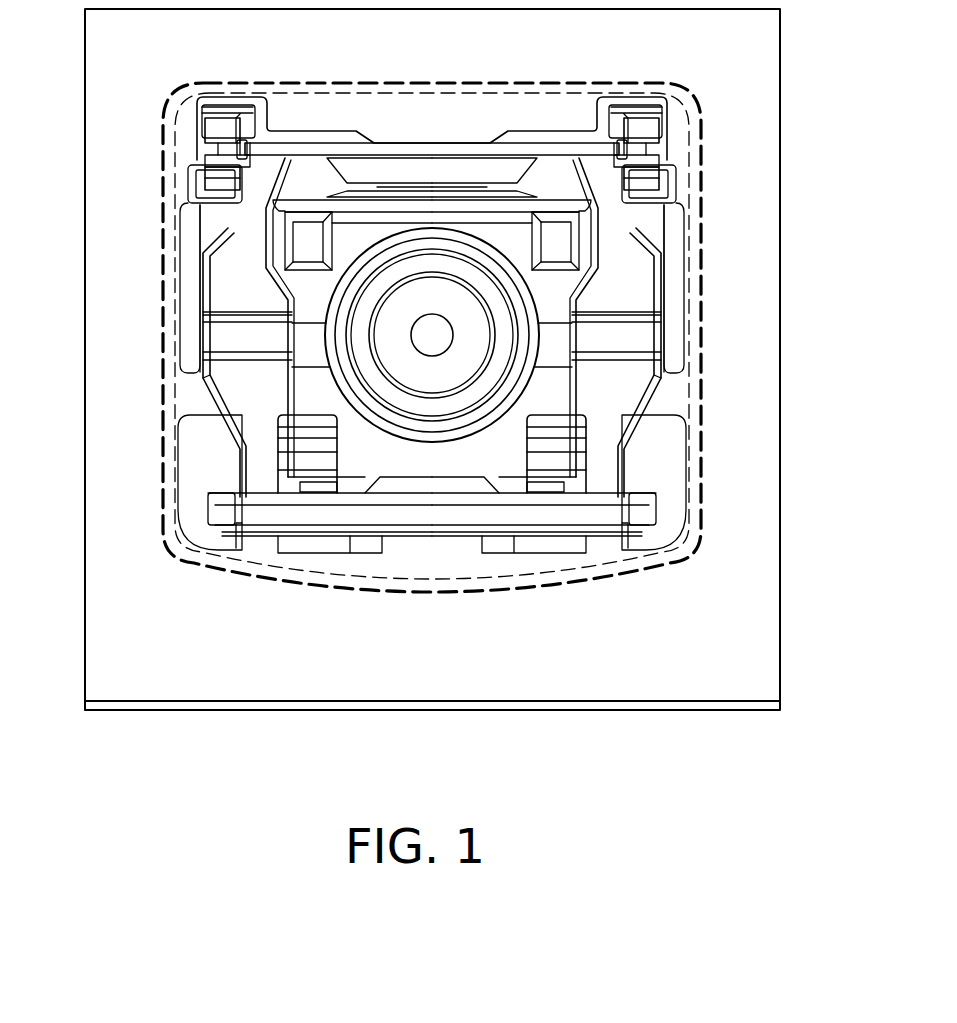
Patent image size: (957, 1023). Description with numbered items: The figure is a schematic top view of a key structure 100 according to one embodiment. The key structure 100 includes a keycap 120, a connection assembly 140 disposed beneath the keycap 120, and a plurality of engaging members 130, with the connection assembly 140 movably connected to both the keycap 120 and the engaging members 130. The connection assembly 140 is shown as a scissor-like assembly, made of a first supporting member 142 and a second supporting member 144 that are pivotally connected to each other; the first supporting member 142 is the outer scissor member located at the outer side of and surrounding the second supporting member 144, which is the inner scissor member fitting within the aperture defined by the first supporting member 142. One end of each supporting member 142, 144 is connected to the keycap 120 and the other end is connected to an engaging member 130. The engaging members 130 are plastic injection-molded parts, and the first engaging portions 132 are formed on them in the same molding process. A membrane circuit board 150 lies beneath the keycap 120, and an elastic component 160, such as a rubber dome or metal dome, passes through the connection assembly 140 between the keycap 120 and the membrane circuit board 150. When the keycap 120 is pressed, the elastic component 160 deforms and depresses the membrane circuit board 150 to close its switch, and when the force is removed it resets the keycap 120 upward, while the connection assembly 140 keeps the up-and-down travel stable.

The key structure 100 is at (750, 760).
The keycap 120 is at (682, 547).
The engaging members 130 is at (222, 133).
The first engaging portions 132 is at (227, 155).
The connection assembly 140 is at (842, 362).
The first supporting member 142 is at (628, 395).
The second supporting member 144 is at (562, 402).
The membrane circuit board 150 is at (755, 50).
The elastic component 160 is at (468, 332).